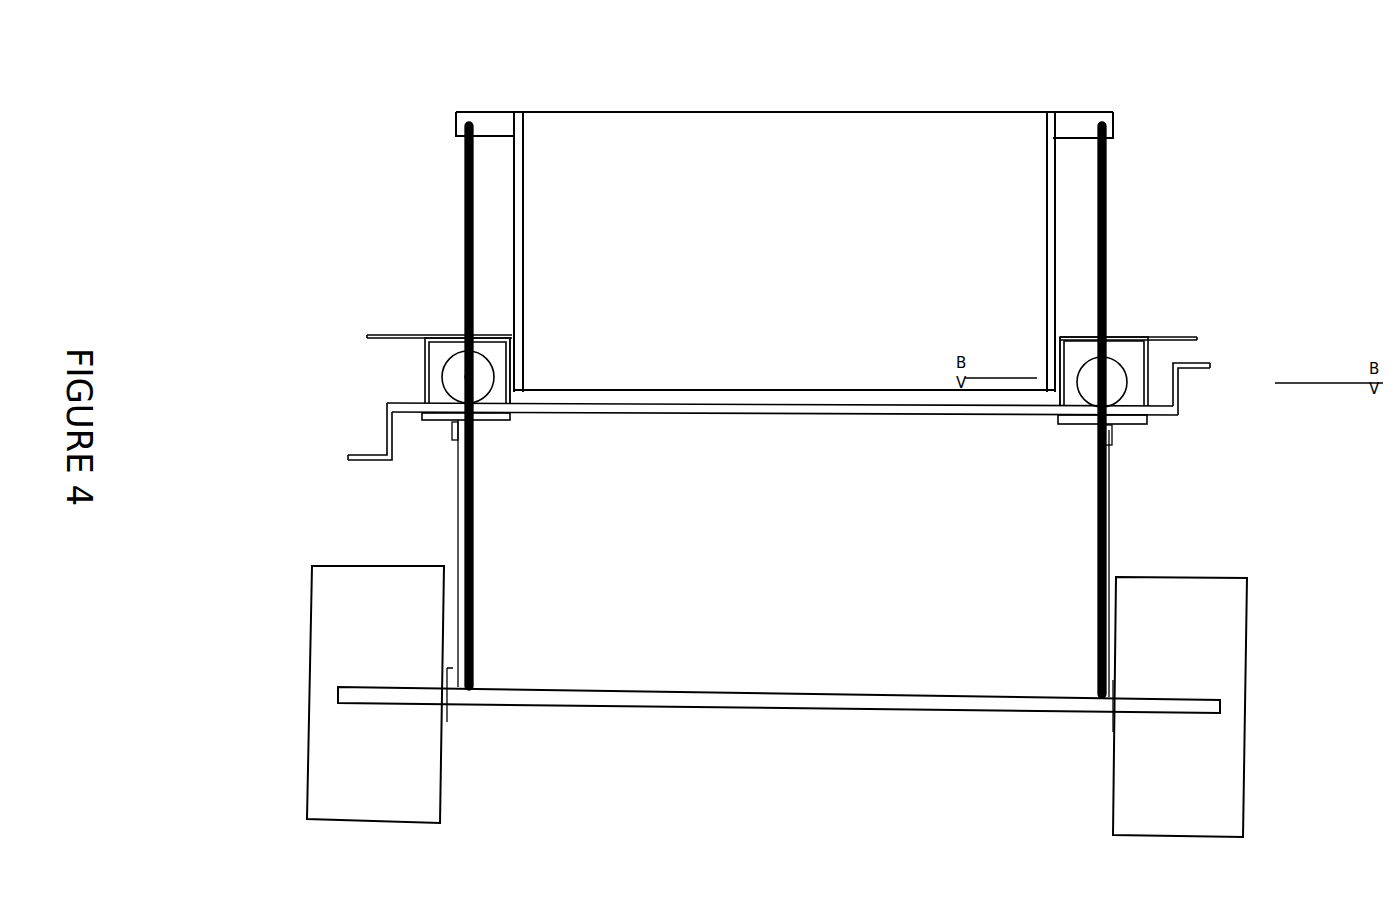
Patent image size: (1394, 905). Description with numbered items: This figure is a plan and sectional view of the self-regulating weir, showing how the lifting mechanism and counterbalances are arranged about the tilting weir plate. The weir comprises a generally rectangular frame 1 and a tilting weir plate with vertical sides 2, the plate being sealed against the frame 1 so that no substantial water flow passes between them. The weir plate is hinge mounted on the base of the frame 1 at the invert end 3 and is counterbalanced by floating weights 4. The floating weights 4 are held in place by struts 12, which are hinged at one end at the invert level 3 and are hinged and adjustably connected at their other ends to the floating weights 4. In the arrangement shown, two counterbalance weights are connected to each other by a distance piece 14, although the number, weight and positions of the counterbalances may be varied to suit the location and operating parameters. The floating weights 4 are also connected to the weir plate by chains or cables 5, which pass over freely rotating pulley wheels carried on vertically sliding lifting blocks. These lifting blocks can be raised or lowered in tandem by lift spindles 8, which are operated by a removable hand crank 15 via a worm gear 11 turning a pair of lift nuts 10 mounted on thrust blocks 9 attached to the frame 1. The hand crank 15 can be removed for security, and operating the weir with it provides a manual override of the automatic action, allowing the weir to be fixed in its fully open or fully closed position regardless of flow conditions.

The frame 1 is at (400, 335).
The vertical sides of tilting weir plate 2 is at (785, 173).
The invert end 3 is at (512, 397).
The floating weights 4 is at (420, 752).
The chains or cables 5 is at (470, 513).
The lift spindles 8 is at (453, 356).
The thrust blocks 9 is at (433, 372).
The lift nuts 10 is at (468, 377).
The worm gear 11 is at (463, 407).
The struts 12 is at (458, 530).
The distance piece 14 is at (738, 700).
The hand crank 15 is at (388, 428).